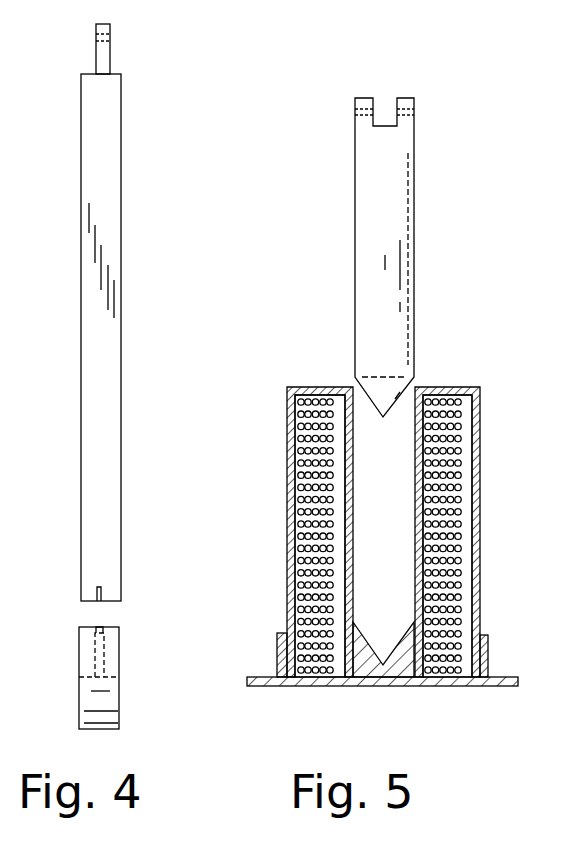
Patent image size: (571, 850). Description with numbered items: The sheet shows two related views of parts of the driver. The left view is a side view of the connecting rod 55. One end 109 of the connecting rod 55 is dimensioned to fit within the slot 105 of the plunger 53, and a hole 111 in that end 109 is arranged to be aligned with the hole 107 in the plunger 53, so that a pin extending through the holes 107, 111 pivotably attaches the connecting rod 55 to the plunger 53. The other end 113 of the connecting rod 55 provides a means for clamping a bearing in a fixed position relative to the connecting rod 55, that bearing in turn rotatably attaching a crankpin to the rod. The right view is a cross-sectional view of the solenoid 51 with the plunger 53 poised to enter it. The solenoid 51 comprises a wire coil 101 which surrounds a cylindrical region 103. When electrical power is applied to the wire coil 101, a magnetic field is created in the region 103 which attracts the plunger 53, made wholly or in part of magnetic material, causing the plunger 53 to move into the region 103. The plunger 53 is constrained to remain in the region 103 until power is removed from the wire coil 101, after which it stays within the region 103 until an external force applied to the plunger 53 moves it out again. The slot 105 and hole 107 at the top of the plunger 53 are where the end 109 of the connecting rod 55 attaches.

In FIG. 5, the solenoid 51 is at (372, 536).
In FIG. 5, the plunger 53 is at (369, 231).
In FIG. 4, the connecting rod 55 is at (147, 324).
In FIG. 5, the wire coil 101 is at (447, 496).
In FIG. 5, the cylindrical region 103 is at (409, 507).
In FIG. 5, the slot 105 is at (385, 120).
In FIG. 5, the hole 107 is at (402, 110).
In FIG. 4, the end 109 is at (104, 59).
In FIG. 4, the hole 111 is at (98, 42).
In FIG. 4, the other end 113 is at (150, 683).